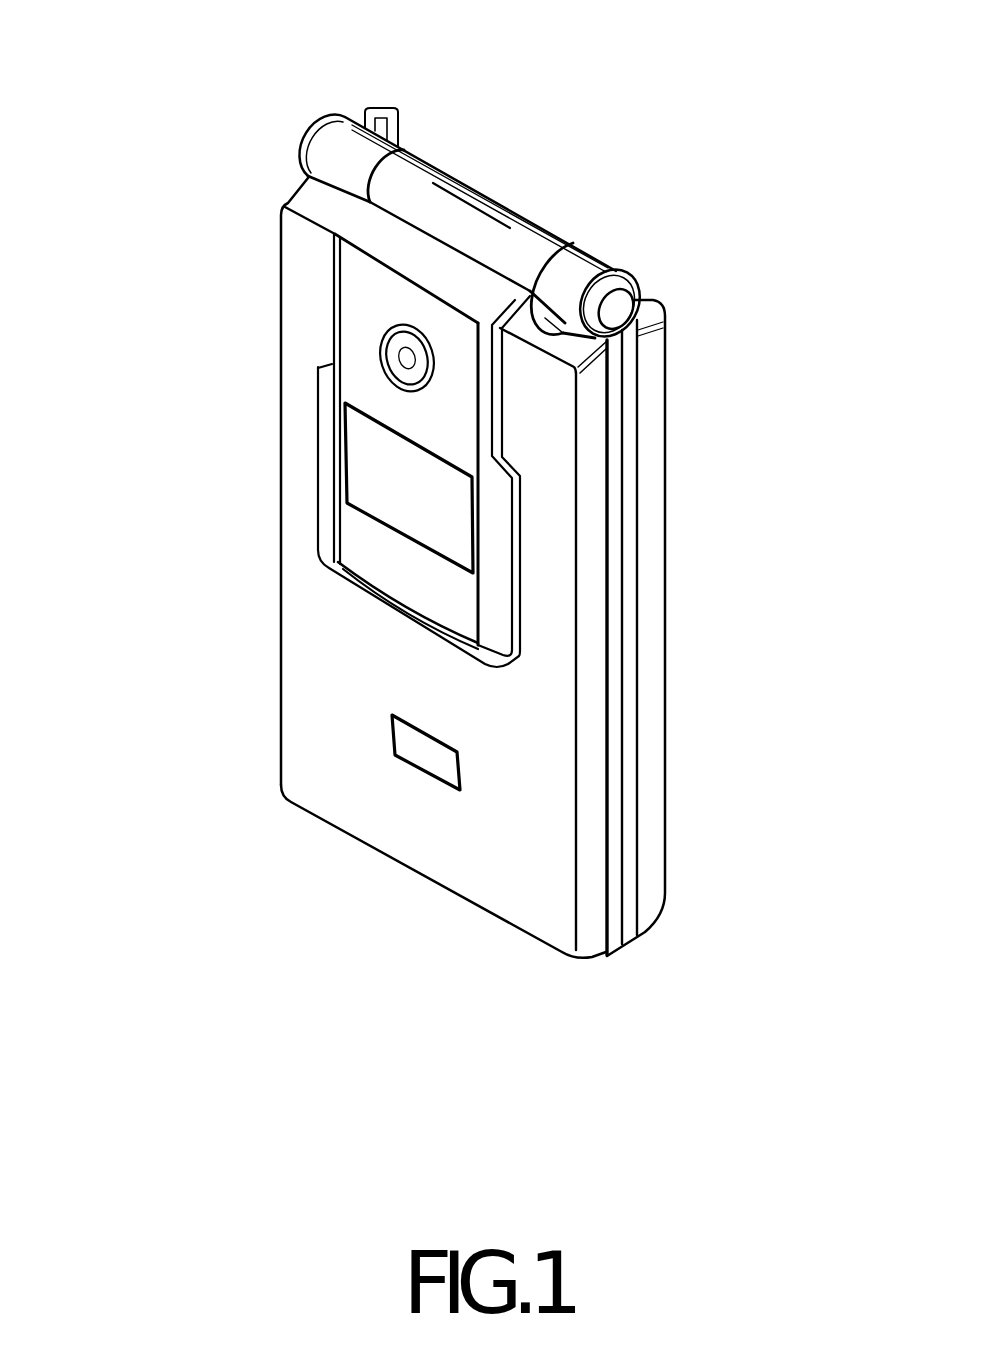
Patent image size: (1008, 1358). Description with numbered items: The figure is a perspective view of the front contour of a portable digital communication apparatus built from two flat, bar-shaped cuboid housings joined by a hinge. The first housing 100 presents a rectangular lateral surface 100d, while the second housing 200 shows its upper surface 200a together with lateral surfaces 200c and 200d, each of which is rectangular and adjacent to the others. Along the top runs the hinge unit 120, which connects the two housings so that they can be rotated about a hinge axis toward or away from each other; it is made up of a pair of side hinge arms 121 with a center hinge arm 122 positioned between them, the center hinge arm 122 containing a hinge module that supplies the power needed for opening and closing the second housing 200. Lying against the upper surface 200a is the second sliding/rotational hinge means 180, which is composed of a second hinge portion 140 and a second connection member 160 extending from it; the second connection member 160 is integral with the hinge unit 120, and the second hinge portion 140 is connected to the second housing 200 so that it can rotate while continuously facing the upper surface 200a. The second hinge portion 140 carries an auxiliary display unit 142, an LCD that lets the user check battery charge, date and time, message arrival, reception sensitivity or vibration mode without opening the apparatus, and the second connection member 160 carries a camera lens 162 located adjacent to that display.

The first housing 100 is at (690, 627).
The lateral surface of the first housing 100d is at (653, 833).
The hinge unit 120 is at (510, 186).
The side hinge arms 121 is at (347, 147).
The center hinge arm 122 is at (433, 197).
The second hinge portion 140 is at (400, 560).
The auxiliary display unit 142 is at (455, 503).
The second connection member 160 is at (455, 288).
The camera lens 162 is at (390, 335).
The second sliding/rotational hinge means 180 is at (302, 424).
The second housing 200 is at (408, 860).
The upper surface of the second housing 200a is at (540, 680).
The lateral surface of the second housing 200c is at (563, 338).
The lateral surface of the second housing 200d is at (590, 862).